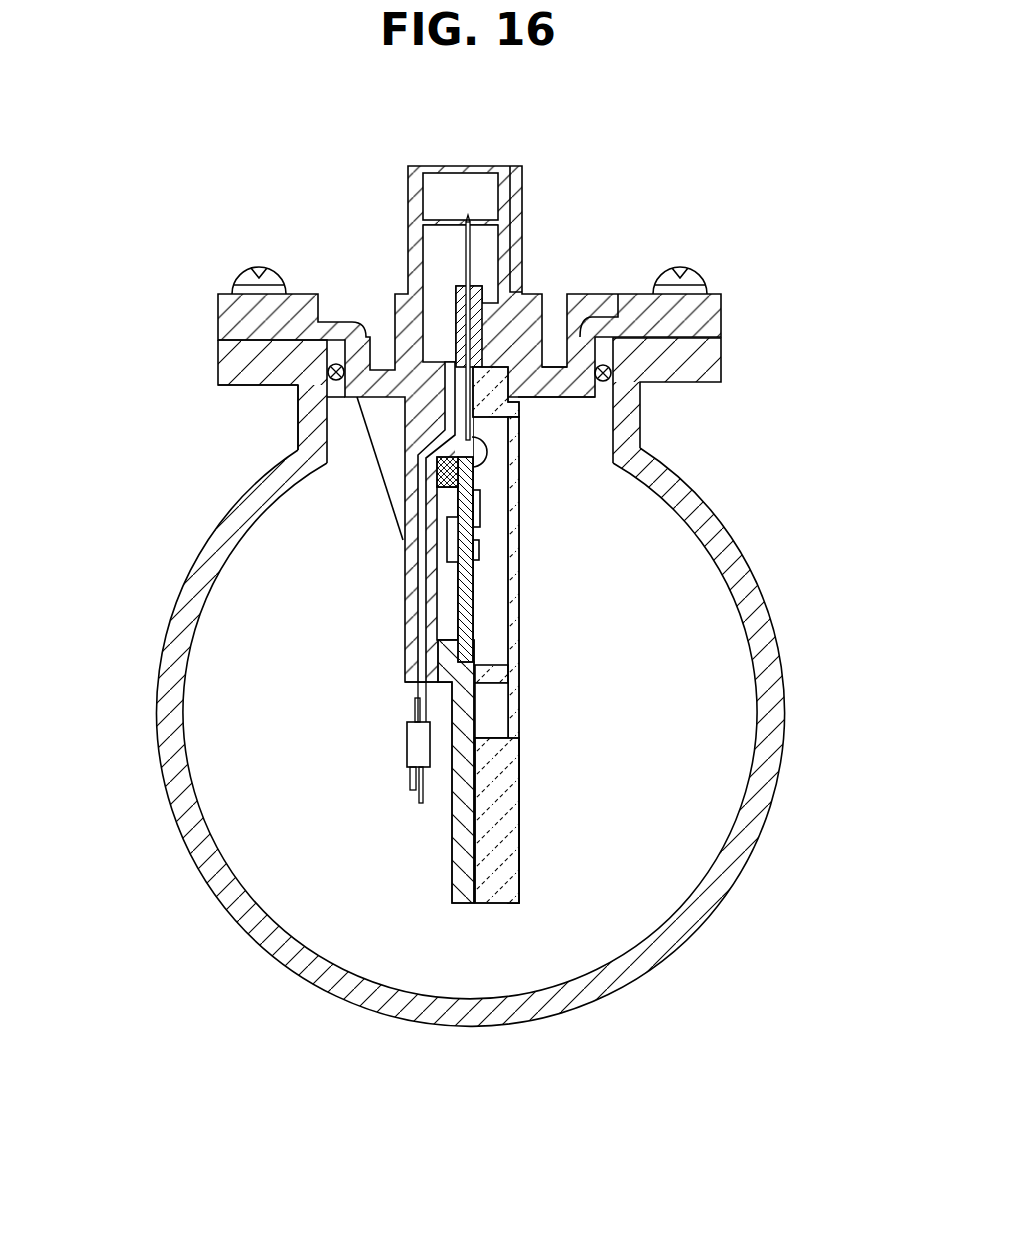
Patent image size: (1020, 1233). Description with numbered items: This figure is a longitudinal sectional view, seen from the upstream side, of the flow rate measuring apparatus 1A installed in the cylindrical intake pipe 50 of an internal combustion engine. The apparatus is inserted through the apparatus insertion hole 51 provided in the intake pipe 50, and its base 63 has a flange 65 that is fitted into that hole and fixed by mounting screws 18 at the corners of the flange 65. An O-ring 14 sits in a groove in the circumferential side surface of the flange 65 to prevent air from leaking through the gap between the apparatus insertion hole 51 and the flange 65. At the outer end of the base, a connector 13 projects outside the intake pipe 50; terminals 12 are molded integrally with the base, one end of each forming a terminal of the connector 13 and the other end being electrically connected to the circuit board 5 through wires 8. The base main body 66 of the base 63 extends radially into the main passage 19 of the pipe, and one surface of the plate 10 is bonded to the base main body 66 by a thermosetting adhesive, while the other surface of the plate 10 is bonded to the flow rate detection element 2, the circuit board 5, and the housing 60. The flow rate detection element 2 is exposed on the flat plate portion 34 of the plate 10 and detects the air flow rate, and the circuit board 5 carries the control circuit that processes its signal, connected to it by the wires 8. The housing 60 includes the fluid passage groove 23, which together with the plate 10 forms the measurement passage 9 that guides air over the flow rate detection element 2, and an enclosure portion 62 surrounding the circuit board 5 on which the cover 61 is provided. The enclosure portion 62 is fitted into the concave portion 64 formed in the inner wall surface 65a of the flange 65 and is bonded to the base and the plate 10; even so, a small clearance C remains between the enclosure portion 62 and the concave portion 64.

The connector 13 is at (417, 202).
The mounting screws 18 is at (272, 268).
The terminals 12 is at (460, 398).
The concave portion 64 is at (548, 362).
The clearance C is at (540, 366).
The flange 65 is at (708, 317).
The apparatus insertion hole 51 is at (330, 446).
The O-ring 14 is at (545, 385).
The inner wall surface 65a is at (480, 442).
The circuit board 5 is at (460, 490).
The enclosure portion 62 is at (482, 462).
The base main body 66 is at (410, 578).
The wires 8 is at (476, 470).
The base 63 is at (410, 637).
The cover 61 is at (518, 580).
The flow rate measuring apparatus 1A is at (363, 687).
The measurement passage 9 is at (510, 678).
The flow rate detection element 2 is at (510, 707).
The main passage 19 is at (668, 782).
The flat plate portion 34 is at (453, 806).
The intake pipe 50 is at (213, 905).
The fluid passage groove 23 is at (510, 725).
The housing 60 is at (510, 842).
The plate 10 is at (453, 873).